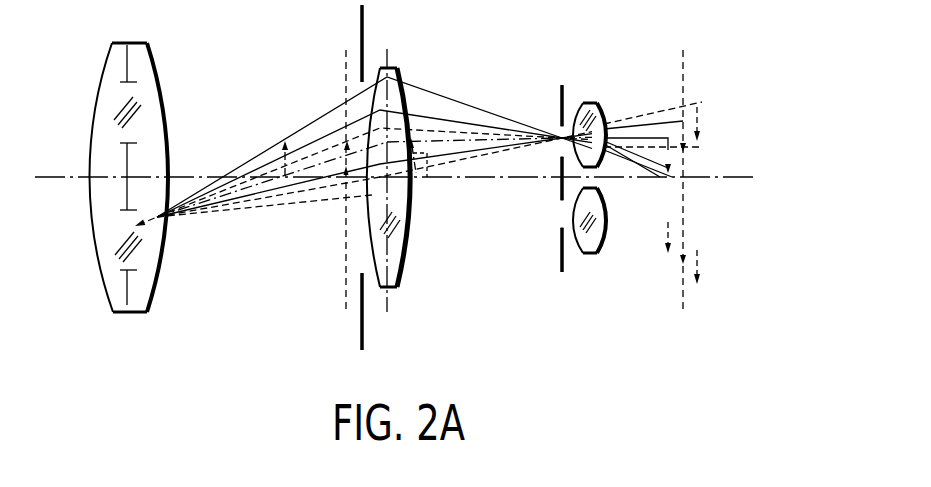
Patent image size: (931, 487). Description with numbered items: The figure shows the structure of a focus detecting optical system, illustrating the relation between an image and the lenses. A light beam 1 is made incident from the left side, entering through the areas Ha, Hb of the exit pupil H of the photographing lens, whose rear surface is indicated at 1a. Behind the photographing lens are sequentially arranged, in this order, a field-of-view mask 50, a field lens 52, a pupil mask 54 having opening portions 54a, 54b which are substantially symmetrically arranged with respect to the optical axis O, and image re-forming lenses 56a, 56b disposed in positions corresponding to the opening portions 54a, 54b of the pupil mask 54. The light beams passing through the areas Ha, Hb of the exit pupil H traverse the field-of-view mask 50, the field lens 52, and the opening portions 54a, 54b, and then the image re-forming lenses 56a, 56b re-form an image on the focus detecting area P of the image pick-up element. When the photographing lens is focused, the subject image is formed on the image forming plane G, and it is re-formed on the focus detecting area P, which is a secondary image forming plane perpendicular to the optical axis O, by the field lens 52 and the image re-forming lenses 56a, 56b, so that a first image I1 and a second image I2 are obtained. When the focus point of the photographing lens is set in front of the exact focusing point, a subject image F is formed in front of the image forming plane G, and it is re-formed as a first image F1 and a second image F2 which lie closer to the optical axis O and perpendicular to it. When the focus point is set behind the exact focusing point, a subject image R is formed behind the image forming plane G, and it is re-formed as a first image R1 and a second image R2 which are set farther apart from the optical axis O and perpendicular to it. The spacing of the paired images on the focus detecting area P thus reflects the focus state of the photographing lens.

The exit pupil H is at (138, 53).
The area of exit pupil Ha is at (127, 218).
The area of exit pupil Hb is at (117, 97).
The exit surface of photographing lens 1a is at (158, 80).
The light beam 1 is at (335, 182).
The subject image F is at (280, 143).
The image forming plane G is at (345, 58).
The field-of-view mask 50 is at (366, 16).
The field lens 52 is at (390, 100).
The subject image R is at (421, 180).
The pupil mask 54 is at (559, 88).
The opening portion 54a is at (560, 130).
The opening portion 54b is at (572, 218).
The image re-forming lens 56a is at (587, 101).
The image re-forming lens 56b is at (592, 255).
The focus detecting area P is at (681, 52).
The first image I1 is at (681, 110).
The second image I2 is at (681, 262).
The first image R1 is at (697, 107).
The second image R2 is at (697, 250).
The optical axis O is at (706, 177).
The first image F1 is at (666, 178).
The second image F2 is at (665, 230).